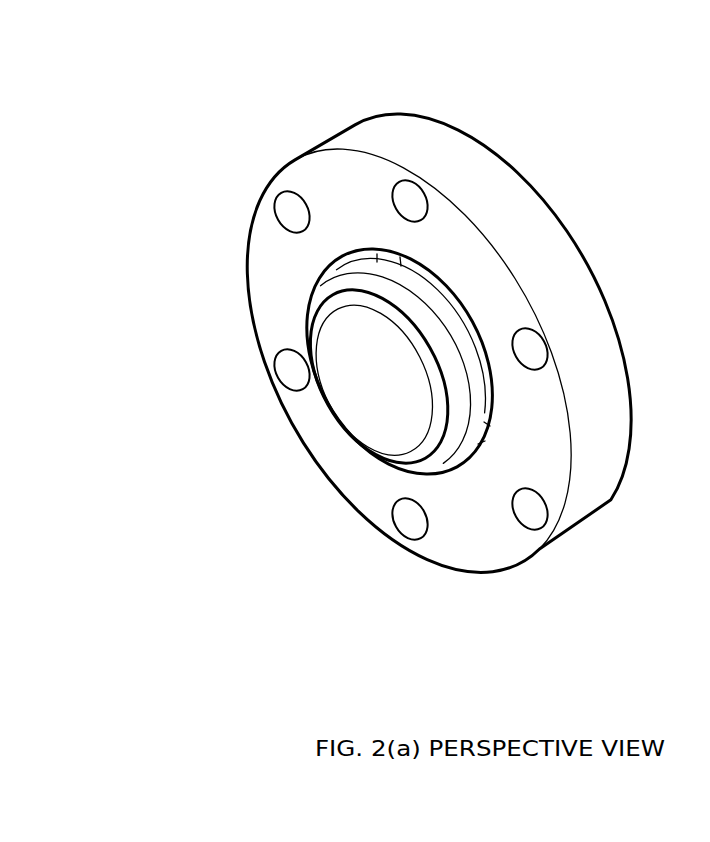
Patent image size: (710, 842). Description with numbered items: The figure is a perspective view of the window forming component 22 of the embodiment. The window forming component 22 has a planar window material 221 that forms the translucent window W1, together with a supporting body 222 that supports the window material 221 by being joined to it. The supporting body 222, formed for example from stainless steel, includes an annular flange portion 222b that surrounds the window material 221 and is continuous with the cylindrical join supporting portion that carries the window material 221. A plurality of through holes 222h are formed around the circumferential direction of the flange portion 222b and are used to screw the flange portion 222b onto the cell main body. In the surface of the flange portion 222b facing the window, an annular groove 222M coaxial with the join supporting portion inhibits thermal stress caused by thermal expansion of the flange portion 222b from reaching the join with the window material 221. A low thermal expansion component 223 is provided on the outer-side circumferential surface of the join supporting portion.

The window forming component 22 is at (270, 131).
The supporting body 222 is at (418, 143).
The flange portion 222b is at (538, 244).
The through holes 222h is at (290, 213).
The annular groove 222M is at (492, 433).
The low thermal expansion component 223 is at (312, 296).
The window material 221 is at (323, 408).
The translucent window W1 is at (373, 398).